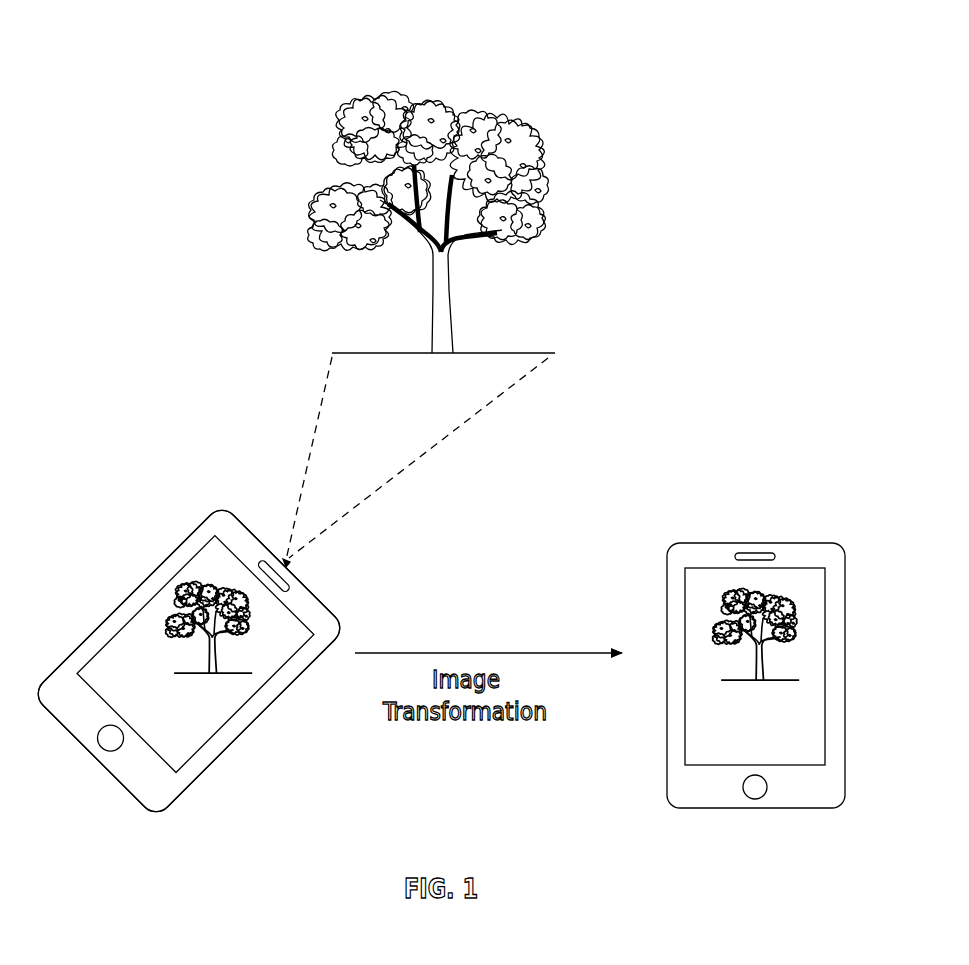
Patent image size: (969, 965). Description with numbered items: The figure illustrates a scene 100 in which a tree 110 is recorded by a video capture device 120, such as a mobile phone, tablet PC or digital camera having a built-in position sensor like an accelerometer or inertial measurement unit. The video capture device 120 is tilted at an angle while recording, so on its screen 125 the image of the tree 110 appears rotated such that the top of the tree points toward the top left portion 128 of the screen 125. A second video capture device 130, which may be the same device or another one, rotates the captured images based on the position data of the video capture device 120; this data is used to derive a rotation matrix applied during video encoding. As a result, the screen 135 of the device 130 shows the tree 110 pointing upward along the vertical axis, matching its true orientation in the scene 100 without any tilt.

The scene 100 is at (268, 48).
The tree 110 is at (462, 108).
The video capture device 120 is at (128, 600).
The screen 125 is at (270, 647).
The top left portion 128 is at (222, 511).
The video capture device 130 is at (808, 542).
The screen 135 is at (715, 610).